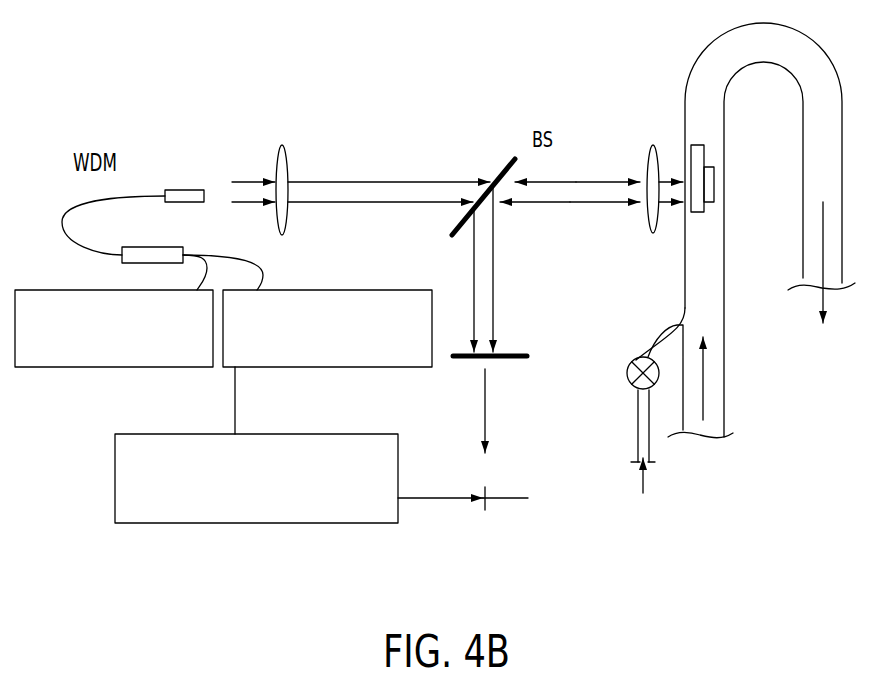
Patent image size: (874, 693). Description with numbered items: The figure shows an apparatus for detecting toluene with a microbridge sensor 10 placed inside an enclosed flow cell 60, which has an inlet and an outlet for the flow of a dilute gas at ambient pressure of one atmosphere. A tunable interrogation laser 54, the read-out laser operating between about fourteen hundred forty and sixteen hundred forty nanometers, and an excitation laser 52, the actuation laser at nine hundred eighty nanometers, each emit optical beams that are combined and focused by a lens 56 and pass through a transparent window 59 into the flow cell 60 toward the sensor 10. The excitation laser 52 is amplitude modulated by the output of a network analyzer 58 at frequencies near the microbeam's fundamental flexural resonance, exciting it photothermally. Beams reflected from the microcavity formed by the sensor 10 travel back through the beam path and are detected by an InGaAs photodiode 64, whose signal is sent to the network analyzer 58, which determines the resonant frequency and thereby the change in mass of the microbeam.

The microbridge sensor 10 is at (695, 213).
The excitation laser 52 is at (405, 360).
The interrogation laser 54 is at (33, 360).
The lens 56 is at (288, 165).
The network analyzer 58 is at (250, 516).
The transparent window 59 is at (650, 227).
The flow cell 60 is at (713, 392).
The photodiode 64 is at (486, 506).